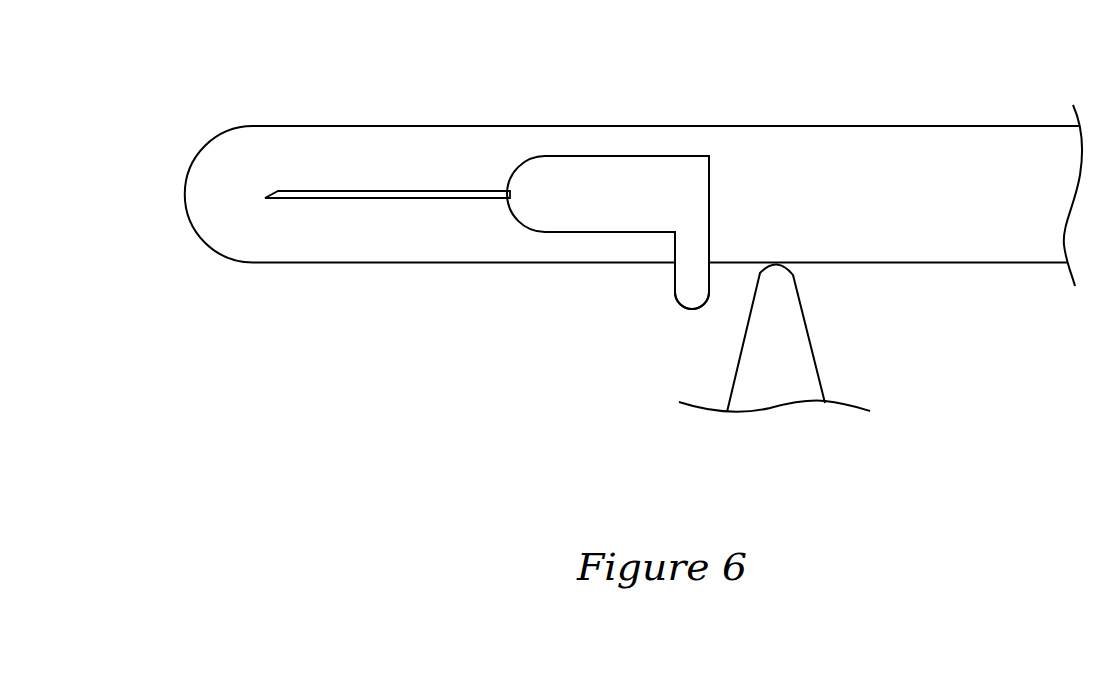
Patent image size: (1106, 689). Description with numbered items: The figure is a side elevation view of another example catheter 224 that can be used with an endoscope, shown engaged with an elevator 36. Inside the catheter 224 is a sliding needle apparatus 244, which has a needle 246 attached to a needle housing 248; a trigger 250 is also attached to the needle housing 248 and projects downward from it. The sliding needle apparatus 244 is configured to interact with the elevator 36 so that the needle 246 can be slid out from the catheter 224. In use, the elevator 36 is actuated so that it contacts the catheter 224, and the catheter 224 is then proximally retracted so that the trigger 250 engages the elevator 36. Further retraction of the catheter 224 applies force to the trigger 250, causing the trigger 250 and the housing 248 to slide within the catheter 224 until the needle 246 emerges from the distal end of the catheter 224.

The catheter 224 is at (539, 120).
The needle 246 is at (343, 190).
The sliding needle apparatus 244 is at (516, 233).
The needle housing 248 is at (612, 233).
The trigger 250 is at (690, 299).
The elevator 36 is at (793, 367).